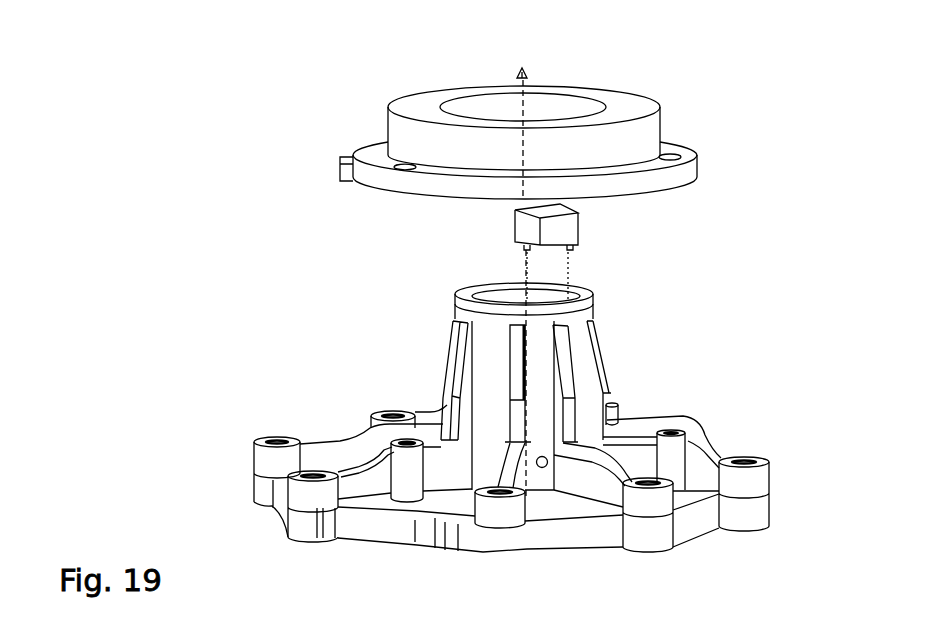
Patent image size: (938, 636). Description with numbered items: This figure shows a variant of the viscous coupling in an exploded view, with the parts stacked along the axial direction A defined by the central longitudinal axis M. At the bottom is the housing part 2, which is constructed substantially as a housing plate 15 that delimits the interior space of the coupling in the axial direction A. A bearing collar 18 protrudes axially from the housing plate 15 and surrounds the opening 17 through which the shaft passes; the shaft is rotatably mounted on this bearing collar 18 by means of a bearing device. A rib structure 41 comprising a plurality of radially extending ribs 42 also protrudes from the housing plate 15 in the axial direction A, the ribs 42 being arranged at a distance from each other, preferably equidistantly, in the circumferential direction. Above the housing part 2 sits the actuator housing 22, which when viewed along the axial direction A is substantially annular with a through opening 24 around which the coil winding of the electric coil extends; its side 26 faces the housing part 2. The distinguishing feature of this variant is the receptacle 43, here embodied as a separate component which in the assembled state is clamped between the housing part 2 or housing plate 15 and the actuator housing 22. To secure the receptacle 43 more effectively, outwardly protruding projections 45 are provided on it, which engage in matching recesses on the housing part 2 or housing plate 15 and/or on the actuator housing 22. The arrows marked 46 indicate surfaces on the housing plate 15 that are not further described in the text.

The housing part 2 is at (511, 419).
The housing plate 15 is at (511, 482).
The opening 17 is at (515, 283).
The bearing collar 18 is at (556, 359).
The actuator housing 22 is at (536, 126).
The through opening 24 is at (497, 102).
The side 26 is at (672, 185).
The rib structure 41 is at (511, 481).
The ribs 42 is at (320, 457).
The receptacle 43 is at (578, 252).
The projections 45 is at (535, 250).
The support surface 46 is at (540, 510).
The axial direction A is at (565, 275).
The central longitudinal axis M is at (526, 103).